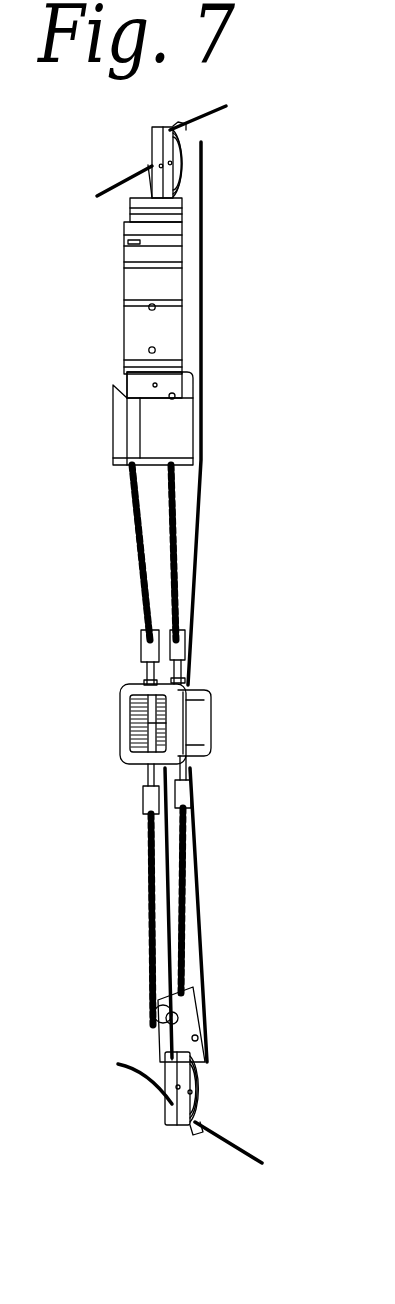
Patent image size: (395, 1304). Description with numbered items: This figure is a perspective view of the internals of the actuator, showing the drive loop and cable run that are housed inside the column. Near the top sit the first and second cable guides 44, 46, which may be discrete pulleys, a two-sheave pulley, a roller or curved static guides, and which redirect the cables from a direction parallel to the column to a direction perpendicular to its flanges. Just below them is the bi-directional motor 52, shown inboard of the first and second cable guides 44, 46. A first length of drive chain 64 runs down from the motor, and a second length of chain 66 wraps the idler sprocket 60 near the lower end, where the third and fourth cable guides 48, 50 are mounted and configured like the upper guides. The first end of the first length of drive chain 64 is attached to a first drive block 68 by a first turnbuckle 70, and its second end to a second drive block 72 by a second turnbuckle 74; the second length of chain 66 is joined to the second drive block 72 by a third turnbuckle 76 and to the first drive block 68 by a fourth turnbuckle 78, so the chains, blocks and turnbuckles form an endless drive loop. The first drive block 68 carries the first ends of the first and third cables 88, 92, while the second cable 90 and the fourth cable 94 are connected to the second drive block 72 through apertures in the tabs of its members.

The first cable guide 44 is at (110, 160).
The second cable guide 46 is at (138, 156).
The third cable guide 48 is at (253, 1093).
The fourth cable guide 50 is at (228, 1097).
The bi-directional motor 52 is at (120, 285).
The idler sprocket 60 is at (137, 1020).
The first length of drive chain 64 is at (123, 579).
The second length of chain 66 is at (144, 838).
The first drive block 68 is at (120, 722).
The first turnbuckle 70 is at (129, 650).
The second drive block 72 is at (216, 722).
The second turnbuckle 74 is at (193, 663).
The third turnbuckle 76 is at (140, 796).
The fourth turnbuckle 78 is at (199, 800).
The first cable 88 is at (220, 112).
The second cable 90 is at (100, 194).
The third cable 92 is at (203, 953).
The fourth cable 94 is at (268, 1148).